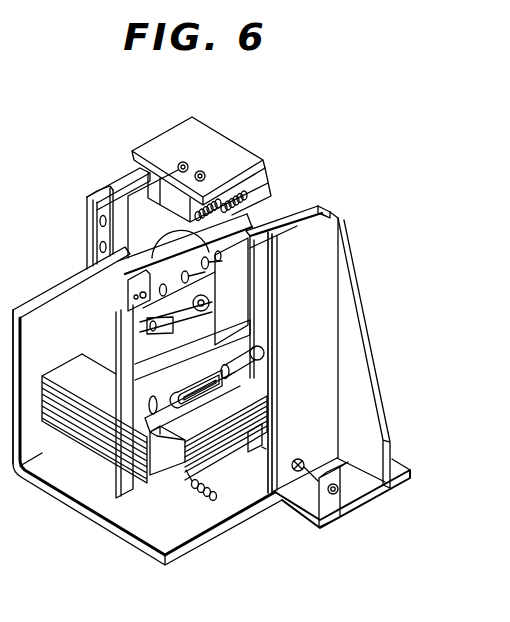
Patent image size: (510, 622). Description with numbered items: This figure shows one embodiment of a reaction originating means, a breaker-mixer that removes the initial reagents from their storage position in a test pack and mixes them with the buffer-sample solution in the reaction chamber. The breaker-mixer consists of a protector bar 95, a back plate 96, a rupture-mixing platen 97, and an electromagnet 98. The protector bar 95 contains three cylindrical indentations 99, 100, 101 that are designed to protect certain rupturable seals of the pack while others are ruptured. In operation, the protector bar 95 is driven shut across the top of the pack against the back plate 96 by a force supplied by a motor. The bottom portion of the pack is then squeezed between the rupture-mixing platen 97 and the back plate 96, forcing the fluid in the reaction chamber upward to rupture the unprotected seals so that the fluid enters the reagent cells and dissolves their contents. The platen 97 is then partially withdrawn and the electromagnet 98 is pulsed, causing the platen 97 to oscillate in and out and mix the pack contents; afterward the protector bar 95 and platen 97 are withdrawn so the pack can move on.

The protector bar 95 is at (97, 270).
The back plate 96 is at (322, 344).
The rupture-mixing platen 97 is at (243, 310).
The electromagnet 98 is at (200, 394).
The cylindrical indentation 99 is at (128, 309).
The cylindrical indentation 100 is at (212, 307).
The cylindrical indentation 101 is at (203, 272).